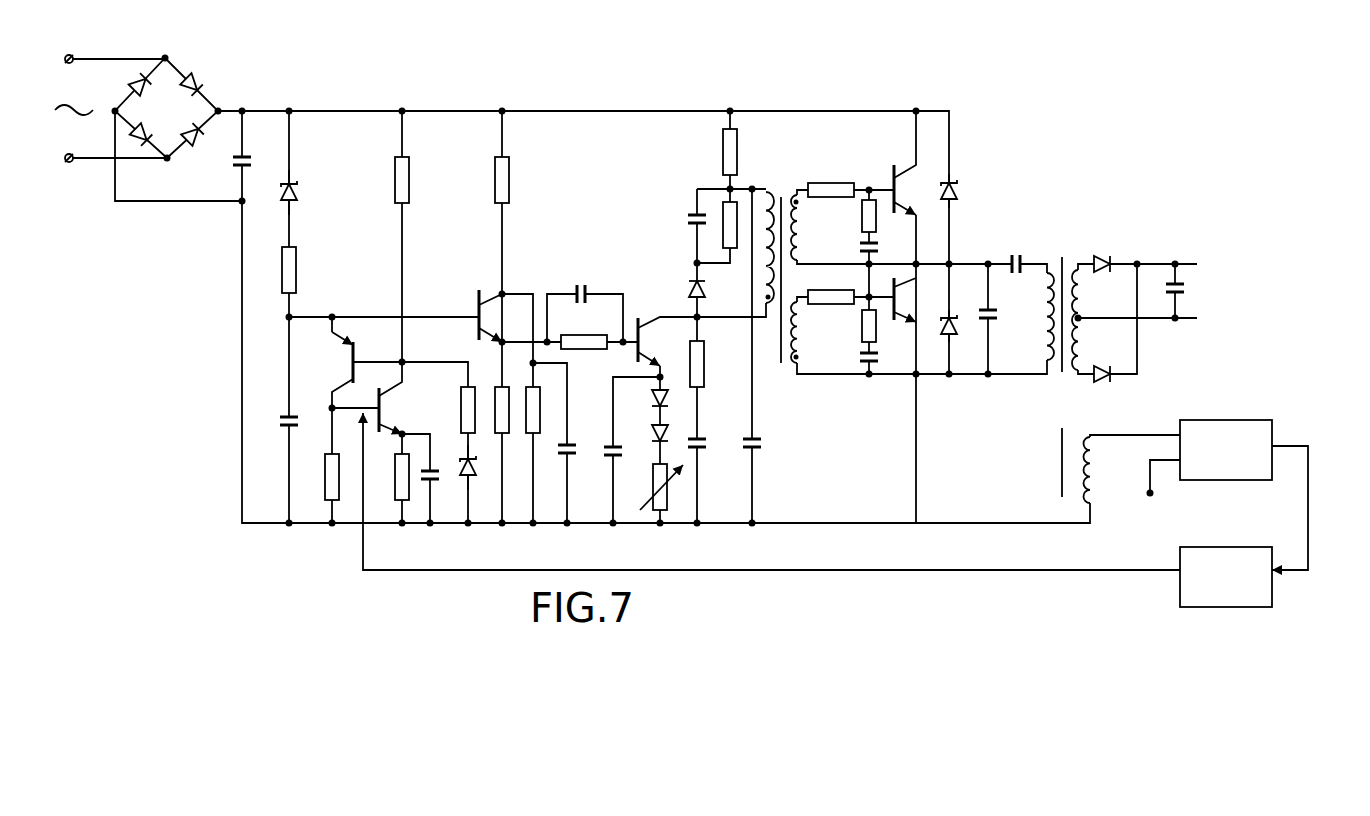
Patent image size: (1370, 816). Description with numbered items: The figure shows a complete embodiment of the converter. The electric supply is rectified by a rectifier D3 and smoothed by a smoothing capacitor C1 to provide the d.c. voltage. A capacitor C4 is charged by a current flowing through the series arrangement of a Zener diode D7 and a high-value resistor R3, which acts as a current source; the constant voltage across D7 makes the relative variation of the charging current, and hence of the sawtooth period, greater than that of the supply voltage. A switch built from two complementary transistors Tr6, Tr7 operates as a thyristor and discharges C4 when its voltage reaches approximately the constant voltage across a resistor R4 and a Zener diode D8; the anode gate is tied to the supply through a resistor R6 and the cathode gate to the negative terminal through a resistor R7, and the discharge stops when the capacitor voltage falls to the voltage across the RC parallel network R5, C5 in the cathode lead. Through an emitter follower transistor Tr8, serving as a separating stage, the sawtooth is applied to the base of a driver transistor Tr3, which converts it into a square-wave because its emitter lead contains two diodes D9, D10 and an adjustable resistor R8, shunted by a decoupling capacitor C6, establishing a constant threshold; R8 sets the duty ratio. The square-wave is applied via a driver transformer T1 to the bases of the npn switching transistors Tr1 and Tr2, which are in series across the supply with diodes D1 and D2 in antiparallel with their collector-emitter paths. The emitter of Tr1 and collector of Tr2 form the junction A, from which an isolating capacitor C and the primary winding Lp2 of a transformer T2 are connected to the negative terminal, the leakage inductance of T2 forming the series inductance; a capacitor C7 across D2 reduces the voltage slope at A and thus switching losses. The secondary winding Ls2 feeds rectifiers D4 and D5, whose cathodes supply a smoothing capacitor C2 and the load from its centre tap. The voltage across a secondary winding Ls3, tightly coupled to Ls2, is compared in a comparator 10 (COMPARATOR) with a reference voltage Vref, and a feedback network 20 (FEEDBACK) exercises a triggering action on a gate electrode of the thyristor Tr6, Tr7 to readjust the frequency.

The comparator 10 is at (1268, 432).
The feedback network 20 is at (1230, 552).
The rectifier D3 is at (166, 109).
The smoothing capacitor C1 is at (237, 170).
The Zener diode D7 is at (297, 195).
The high-value resistor R3 is at (296, 286).
The resistor R6 is at (415, 187).
The capacitor C4 is at (284, 426).
The transistor Tr6 is at (350, 360).
The transistor Tr7 is at (388, 408).
The emitter follower transistor Tr8 is at (476, 306).
The resistor R4 is at (461, 406).
The Zener diode D8 is at (462, 460).
The resistor R7 is at (332, 475).
The resistor R5 is at (402, 475).
The capacitor C5 is at (439, 489).
The decoupling capacitor C6 is at (604, 455).
The driver transistor Tr3 is at (645, 340).
The diode D9 is at (652, 398).
The diode D10 is at (652, 432).
The adjustable resistor R8 is at (653, 486).
The driver transformer T1 is at (779, 193).
The switching transistor Tr1 is at (880, 185).
The switching transistor Tr2 is at (897, 303).
The diode D1 is at (951, 190).
The diode D2 is at (951, 325).
The junction A is at (951, 265).
The capacitor C7 is at (1002, 302).
The isolating capacitor C is at (1025, 256).
The primary winding Lp2 is at (1049, 320).
The transformer T2 is at (1061, 372).
The secondary winding Ls2 is at (1092, 320).
The rectifier D4 is at (1096, 260).
The rectifier D5 is at (1108, 388).
The smoothing capacitor C2 is at (1167, 290).
The secondary winding Ls3 is at (1091, 457).
The reference voltage Vref is at (1150, 510).
The comparator COMPARATOR is at (1220, 423).
The feedback network FEEDBACK is at (1228, 595).